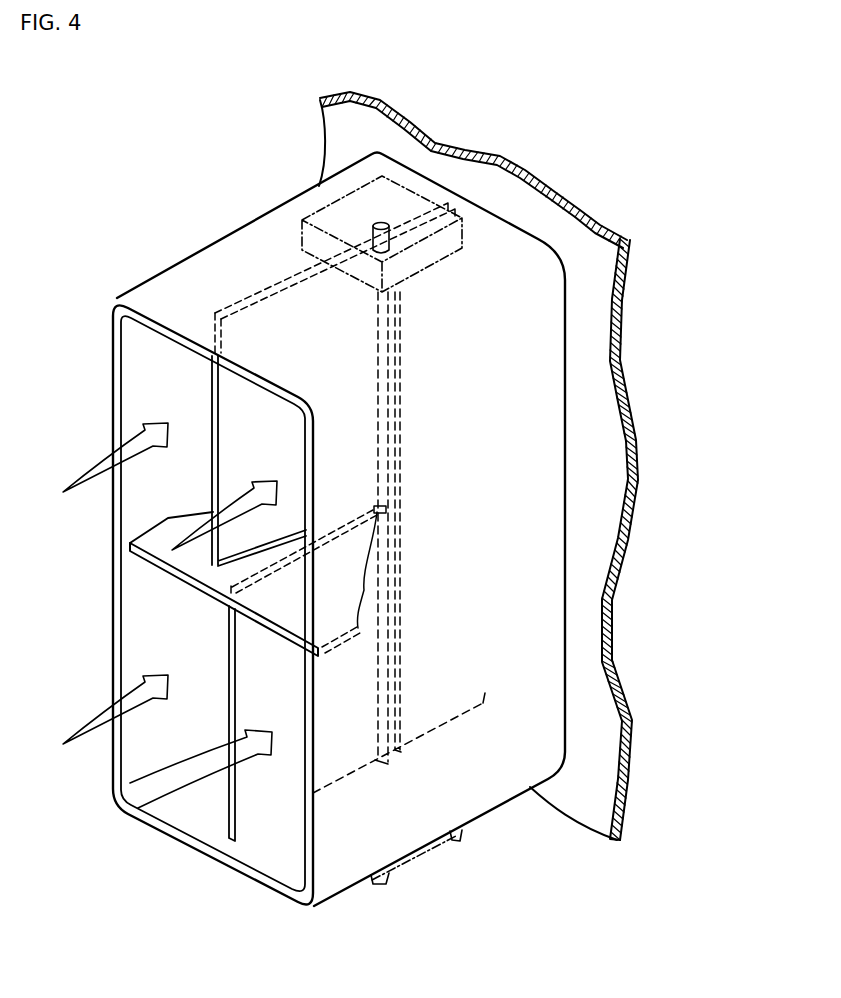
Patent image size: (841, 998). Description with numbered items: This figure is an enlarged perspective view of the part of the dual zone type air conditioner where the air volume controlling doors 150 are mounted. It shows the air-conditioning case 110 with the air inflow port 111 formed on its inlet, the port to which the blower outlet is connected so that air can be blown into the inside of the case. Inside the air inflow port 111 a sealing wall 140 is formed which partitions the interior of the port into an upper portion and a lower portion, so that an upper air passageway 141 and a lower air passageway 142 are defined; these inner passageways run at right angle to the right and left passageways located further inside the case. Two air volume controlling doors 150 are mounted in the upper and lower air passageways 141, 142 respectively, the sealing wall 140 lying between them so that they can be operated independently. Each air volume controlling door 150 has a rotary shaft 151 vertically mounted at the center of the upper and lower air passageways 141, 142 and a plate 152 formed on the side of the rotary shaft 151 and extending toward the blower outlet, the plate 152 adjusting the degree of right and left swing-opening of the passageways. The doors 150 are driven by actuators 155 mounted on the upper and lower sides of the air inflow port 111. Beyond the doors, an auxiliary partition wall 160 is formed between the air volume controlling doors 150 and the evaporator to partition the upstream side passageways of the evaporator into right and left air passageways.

The air-conditioning case 110 is at (590, 293).
The air inflow port 111 is at (340, 893).
The sealing wall 140 is at (163, 568).
The upper air passageway 141 is at (167, 477).
The lower air passageway 142 is at (167, 622).
The air volume controlling door 150 is at (279, 510).
The rotary shaft 151 is at (373, 227).
The plate 152 is at (293, 280).
The actuator 155 is at (348, 203).
The auxiliary partition wall 160 is at (443, 726).